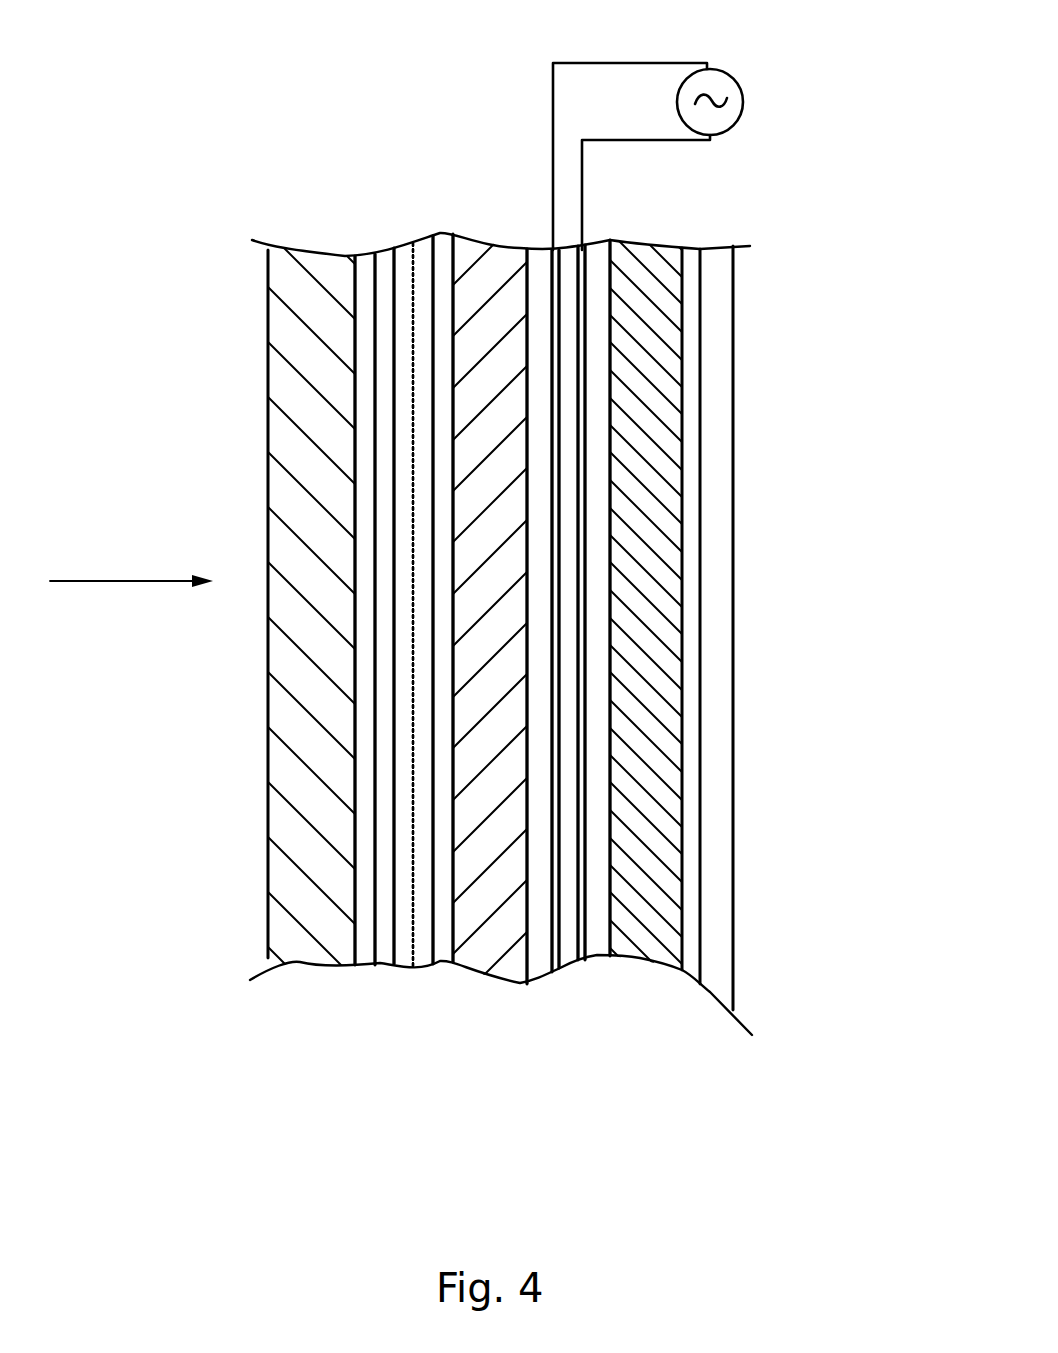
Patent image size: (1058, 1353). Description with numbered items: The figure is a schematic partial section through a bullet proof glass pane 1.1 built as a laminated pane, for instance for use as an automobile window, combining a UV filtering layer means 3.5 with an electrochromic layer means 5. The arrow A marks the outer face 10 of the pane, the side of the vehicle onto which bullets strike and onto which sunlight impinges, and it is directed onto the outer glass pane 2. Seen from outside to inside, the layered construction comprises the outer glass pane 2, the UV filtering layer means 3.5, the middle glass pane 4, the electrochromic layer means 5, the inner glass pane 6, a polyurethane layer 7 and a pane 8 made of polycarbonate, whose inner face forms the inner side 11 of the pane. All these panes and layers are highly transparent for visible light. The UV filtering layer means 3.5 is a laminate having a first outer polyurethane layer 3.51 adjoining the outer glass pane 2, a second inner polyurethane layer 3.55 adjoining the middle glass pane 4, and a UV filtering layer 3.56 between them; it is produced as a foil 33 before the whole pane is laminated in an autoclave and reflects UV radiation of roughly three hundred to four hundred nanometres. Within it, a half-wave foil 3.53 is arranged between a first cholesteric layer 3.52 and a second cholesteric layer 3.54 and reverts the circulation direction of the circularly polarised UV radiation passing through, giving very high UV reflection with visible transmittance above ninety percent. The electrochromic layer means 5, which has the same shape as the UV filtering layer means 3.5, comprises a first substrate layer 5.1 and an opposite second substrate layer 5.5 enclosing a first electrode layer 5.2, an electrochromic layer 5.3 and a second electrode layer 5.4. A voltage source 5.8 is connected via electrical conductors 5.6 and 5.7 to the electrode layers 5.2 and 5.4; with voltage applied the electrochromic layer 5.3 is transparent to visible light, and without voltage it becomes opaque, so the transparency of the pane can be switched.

The bullet proof glass pane 1.1 is at (210, 1045).
The outer glass pane 2 is at (300, 957).
The outer face 10 is at (250, 760).
The foil 33 is at (358, 662).
The UV filtering layer means 3.5 is at (360, 967).
The first outer polyurethane layer 3.51 is at (358, 252).
The first cholesteric layer 3.52 is at (384, 256).
The λ/2 foil 3.53 is at (400, 250).
The second cholesteric layer 3.54 is at (421, 252).
The second inner polyurethane layer 3.55 is at (440, 957).
The UV filtering layer 3.56 is at (395, 373).
The middle glass pane 4 is at (483, 967).
The electrochromic layer means 5 is at (555, 970).
The first substrate layer 5.1 is at (545, 322).
The first electrode layer 5.2 is at (555, 265).
The electrochromic layer 5.3 is at (568, 490).
The second electrode layer 5.4 is at (582, 447).
The second substrate layer 5.5 is at (600, 394).
The electrical conductor 5.6 is at (600, 63).
The electrical conductor 5.7 is at (648, 140).
The voltage source 5.8 is at (733, 112).
The inner glass pane 6 is at (636, 940).
The polyurethane layer 7 is at (683, 960).
The polycarbonate pane 8 is at (720, 940).
The inner side 11 is at (748, 690).
The arrow A is at (131, 568).